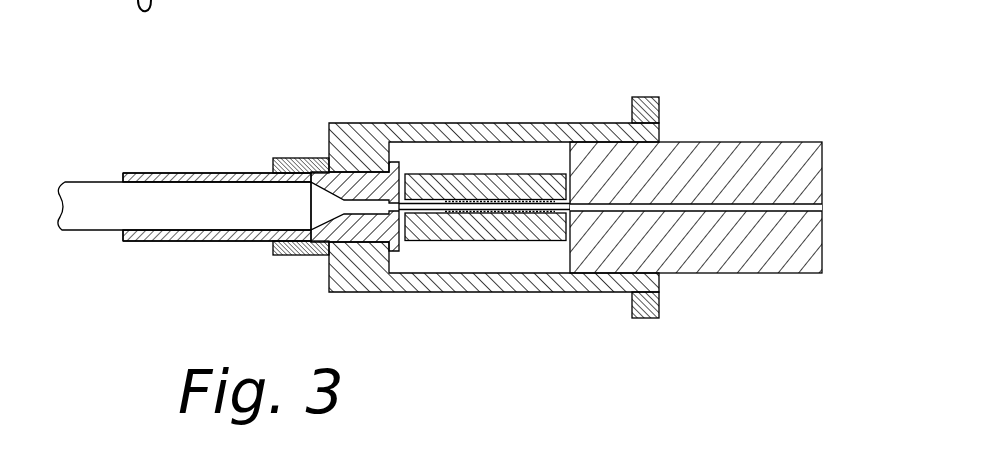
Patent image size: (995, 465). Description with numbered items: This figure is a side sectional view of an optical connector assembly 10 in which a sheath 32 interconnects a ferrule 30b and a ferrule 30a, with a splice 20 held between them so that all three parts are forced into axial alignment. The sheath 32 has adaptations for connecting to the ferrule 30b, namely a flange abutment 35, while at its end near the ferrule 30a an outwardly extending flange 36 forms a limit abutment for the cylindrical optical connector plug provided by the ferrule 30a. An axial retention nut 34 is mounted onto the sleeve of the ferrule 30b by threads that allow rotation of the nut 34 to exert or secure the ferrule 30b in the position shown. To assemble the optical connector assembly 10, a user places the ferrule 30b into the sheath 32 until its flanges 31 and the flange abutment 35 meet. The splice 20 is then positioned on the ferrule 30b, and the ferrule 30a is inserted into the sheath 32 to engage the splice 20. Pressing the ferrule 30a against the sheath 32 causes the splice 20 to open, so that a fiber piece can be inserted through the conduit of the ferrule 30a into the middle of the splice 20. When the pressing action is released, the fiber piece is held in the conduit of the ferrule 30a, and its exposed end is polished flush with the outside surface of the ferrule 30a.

The optical fiber connector assembly 10 is at (774, 91).
The splice 20 is at (448, 226).
The ferrule 30a is at (778, 273).
The ferrule 30b is at (165, 241).
The flanges 31 is at (399, 244).
The sheath 32 is at (500, 123).
The axial retention nut 34 is at (295, 158).
The flange abutment 35 is at (330, 291).
The outwardly extending flange 36 is at (645, 308).